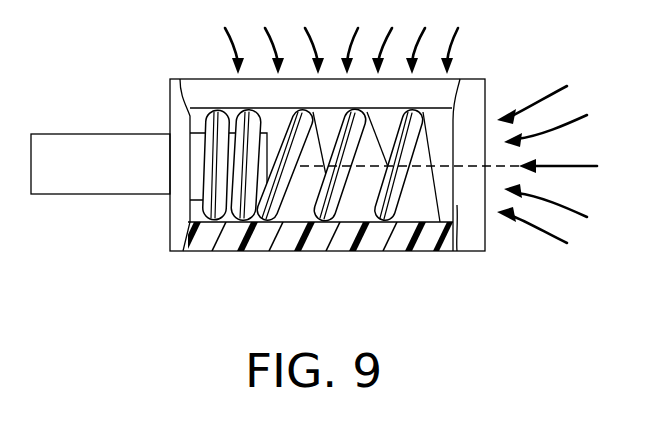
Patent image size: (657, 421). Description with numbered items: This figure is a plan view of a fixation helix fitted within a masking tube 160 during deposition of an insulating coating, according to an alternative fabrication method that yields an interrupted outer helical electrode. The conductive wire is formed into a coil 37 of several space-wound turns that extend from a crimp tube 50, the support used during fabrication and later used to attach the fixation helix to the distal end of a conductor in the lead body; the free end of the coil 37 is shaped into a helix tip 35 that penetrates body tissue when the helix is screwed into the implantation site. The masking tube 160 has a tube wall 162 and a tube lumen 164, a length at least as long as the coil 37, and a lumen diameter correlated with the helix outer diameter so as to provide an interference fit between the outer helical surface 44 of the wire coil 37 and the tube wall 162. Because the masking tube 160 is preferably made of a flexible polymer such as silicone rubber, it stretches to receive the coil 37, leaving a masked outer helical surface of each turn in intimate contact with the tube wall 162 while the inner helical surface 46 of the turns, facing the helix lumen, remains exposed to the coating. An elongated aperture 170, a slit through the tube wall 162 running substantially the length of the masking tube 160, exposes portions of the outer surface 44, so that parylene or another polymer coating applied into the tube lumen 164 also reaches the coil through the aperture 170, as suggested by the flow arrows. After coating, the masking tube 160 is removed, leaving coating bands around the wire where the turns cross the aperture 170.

The crimp tube 50 is at (66, 150).
The masking tube 160 is at (194, 262).
The elongated aperture 170 is at (445, 100).
The tube wall 162 is at (236, 243).
The helix tip 35 is at (440, 227).
The tube lumen 164 is at (448, 210).
The coil 37 is at (297, 210).
The outer helical surface 44 is at (327, 211).
The spring back portion 46 is at (378, 150).